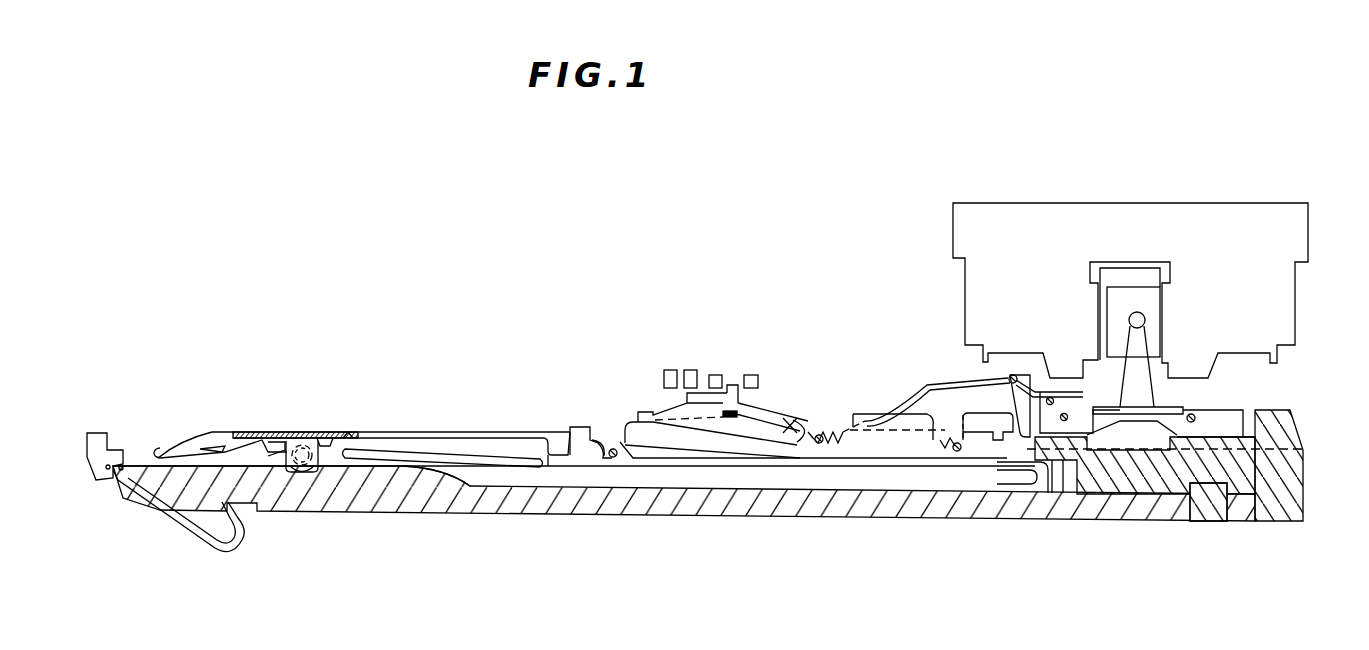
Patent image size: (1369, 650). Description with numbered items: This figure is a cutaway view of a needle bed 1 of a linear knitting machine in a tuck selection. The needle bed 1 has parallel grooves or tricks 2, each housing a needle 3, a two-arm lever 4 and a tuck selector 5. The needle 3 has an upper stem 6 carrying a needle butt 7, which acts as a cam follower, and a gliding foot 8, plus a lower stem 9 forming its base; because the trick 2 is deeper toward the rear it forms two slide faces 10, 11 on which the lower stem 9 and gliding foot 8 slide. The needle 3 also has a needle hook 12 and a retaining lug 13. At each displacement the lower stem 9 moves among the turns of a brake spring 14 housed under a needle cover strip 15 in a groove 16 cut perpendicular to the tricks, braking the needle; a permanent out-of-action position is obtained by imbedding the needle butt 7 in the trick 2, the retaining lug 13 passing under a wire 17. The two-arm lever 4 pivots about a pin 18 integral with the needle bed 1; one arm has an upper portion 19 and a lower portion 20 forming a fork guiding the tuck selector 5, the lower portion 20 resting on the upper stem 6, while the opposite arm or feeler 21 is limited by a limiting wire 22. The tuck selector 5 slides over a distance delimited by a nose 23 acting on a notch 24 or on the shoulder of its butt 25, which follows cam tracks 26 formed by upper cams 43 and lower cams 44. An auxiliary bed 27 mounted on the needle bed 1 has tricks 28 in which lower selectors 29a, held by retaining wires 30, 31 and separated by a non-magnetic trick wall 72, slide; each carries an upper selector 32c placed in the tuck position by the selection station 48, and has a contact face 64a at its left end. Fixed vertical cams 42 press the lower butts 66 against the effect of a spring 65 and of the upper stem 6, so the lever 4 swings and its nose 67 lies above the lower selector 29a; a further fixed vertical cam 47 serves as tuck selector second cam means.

The needle bed 1 is at (150, 500).
The trick 2 is at (202, 442).
The needle 3 is at (282, 447).
The two-arm lever 4 is at (893, 448).
The tuck selector 5 is at (717, 424).
The upper stem 6 is at (397, 440).
The needle butt 7 is at (582, 430).
The gliding foot 8 is at (1036, 493).
The lower stem 9 is at (425, 458).
The slide face 10 is at (135, 460).
The slide face 11 is at (466, 484).
The needle hook 12 is at (158, 447).
The retaining lug 13 is at (607, 445).
The brake spring 14 is at (310, 470).
The needle cover strip 15 is at (257, 432).
The groove 16 is at (293, 472).
The wire 17 is at (614, 458).
The pin 18 is at (822, 443).
The upper portion 19 is at (763, 410).
The lower portion 20 is at (692, 440).
The feeler 21 is at (957, 427).
The limiting wire 22 is at (957, 451).
The nose 23 is at (732, 418).
The notch 24 is at (790, 425).
The butt 25 is at (755, 400).
The cam track 26 is at (734, 384).
The auxiliary bed 27 is at (1283, 478).
The trick 28 is at (1242, 427).
The lower selector 29a is at (1138, 363).
The retaining wire 30 is at (1073, 388).
The retaining wire 31 is at (1190, 422).
The upper selector 32c is at (1152, 298).
The fixed vertical cam 42 is at (689, 370).
The upper cam 43 is at (716, 375).
The lower cam 44 is at (751, 375).
The fixed vertical cam 47 is at (670, 370).
The selection station 48 is at (1114, 240).
The contact face 64a is at (1038, 377).
The spring 65 is at (921, 387).
The lower butt 66 is at (687, 403).
The nose 67 is at (1018, 440).
The non-magnetic trick wall 72 is at (1237, 414).